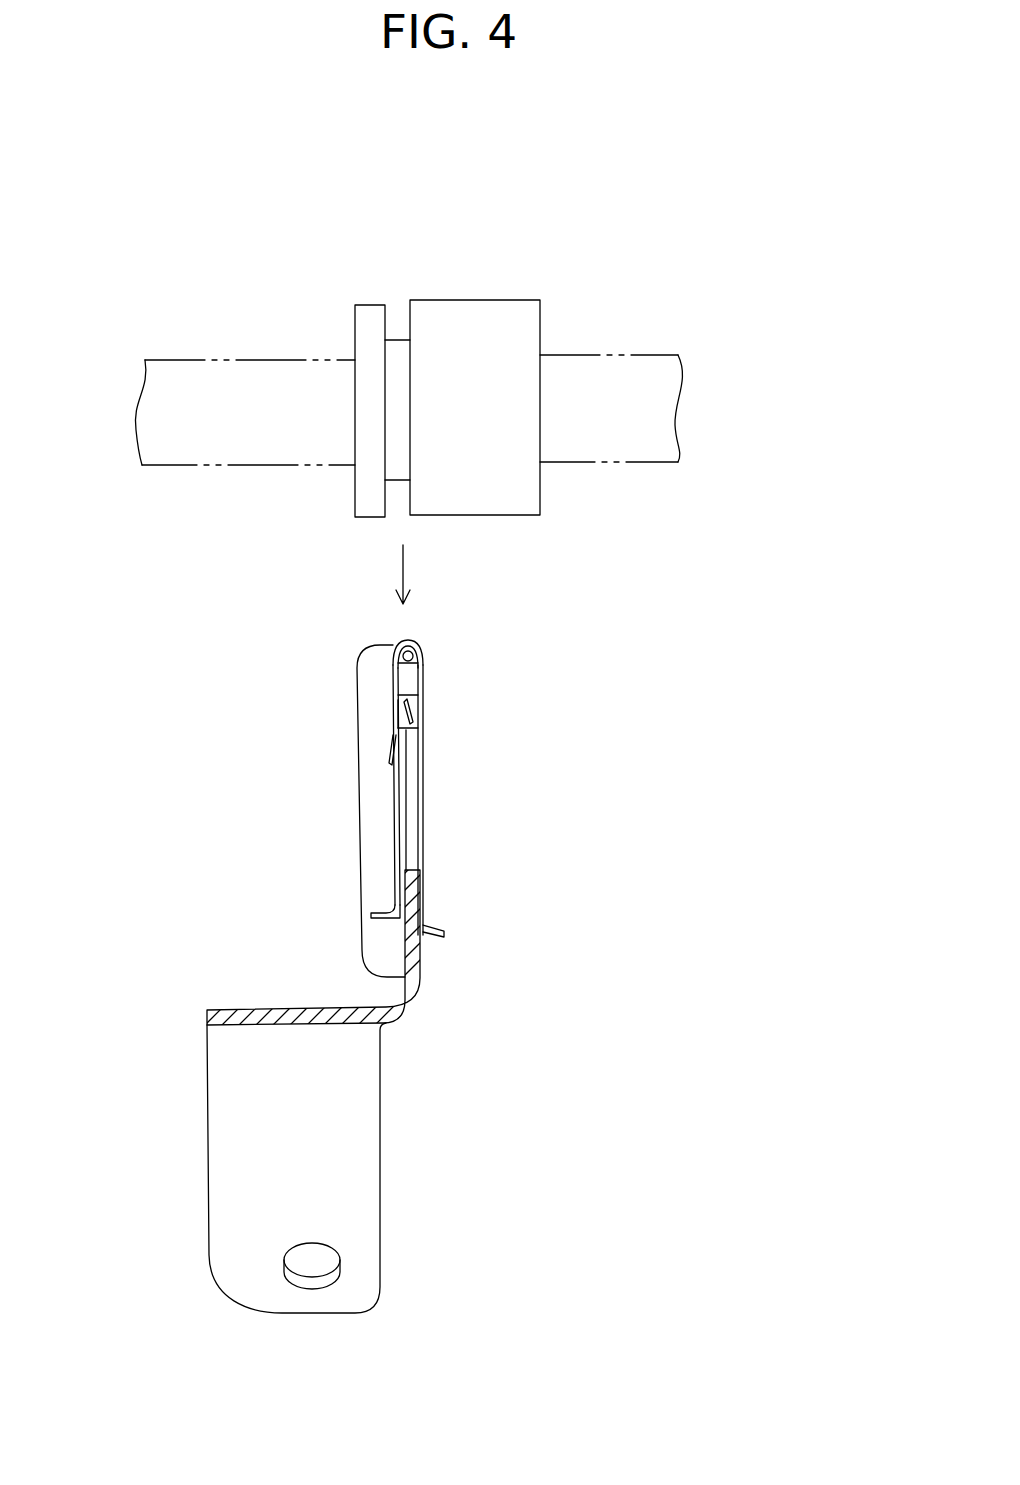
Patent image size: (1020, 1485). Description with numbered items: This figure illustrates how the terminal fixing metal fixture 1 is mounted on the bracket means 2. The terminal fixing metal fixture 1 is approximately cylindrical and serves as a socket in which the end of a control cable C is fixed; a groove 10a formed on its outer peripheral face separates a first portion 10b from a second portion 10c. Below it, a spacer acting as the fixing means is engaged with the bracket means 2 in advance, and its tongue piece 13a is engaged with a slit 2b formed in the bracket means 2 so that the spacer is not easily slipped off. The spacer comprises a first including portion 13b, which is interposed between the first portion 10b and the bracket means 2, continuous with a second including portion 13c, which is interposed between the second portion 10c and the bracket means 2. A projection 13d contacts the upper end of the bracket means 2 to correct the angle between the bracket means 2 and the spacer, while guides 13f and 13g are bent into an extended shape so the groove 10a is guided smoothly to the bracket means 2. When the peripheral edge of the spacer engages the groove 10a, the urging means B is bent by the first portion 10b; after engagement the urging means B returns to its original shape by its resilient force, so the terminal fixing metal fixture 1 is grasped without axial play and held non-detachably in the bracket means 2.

The terminal fixing metal fixture 1 is at (396, 329).
The groove 10a is at (398, 310).
The first portion 10b is at (372, 325).
The second portion 10c is at (478, 330).
The control cable C is at (613, 400).
The bracket means 2 is at (236, 1140).
The slit 2b is at (405, 725).
The urging means B is at (392, 757).
The tongue piece 13a is at (410, 700).
The first including portion 13b is at (398, 842).
The second including portion 13c is at (424, 796).
The projection 13d is at (408, 641).
The guide 13f is at (383, 913).
The guide 13g is at (438, 930).